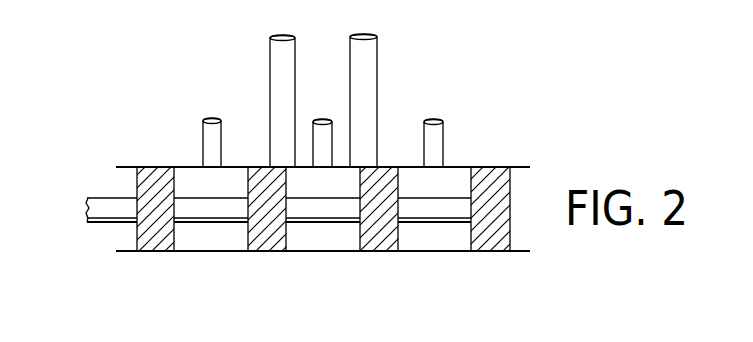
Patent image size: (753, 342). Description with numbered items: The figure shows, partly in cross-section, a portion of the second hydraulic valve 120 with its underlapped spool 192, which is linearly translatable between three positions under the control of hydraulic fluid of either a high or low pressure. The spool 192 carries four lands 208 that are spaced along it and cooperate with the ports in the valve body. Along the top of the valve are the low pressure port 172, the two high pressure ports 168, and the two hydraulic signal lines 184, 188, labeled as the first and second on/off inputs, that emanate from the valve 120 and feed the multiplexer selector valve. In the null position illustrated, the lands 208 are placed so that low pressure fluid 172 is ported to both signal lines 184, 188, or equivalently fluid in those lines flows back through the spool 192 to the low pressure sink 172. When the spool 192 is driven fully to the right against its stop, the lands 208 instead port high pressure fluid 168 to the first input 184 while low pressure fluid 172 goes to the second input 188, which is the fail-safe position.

The second hydraulic valve 120 is at (497, 147).
The high pressure hydraulic fluid 168 is at (200, 105).
The low pressure hydraulic fluid 172 is at (328, 82).
The first multiplexer selector valve input 184 is at (277, 82).
The second multiplexer selector valve input 188 is at (370, 82).
The spool 192 is at (103, 203).
The lands 208 is at (156, 252).